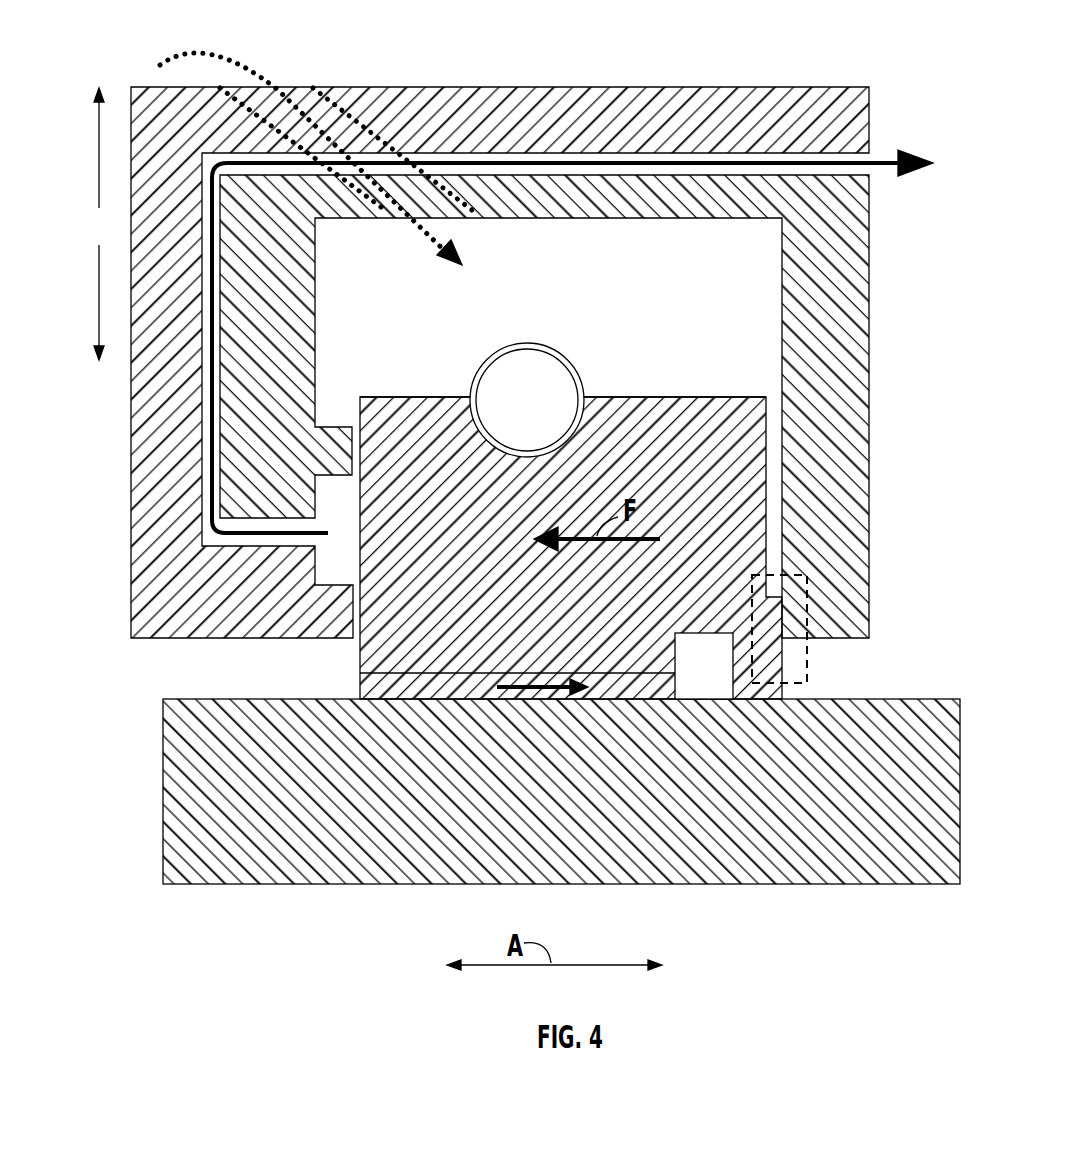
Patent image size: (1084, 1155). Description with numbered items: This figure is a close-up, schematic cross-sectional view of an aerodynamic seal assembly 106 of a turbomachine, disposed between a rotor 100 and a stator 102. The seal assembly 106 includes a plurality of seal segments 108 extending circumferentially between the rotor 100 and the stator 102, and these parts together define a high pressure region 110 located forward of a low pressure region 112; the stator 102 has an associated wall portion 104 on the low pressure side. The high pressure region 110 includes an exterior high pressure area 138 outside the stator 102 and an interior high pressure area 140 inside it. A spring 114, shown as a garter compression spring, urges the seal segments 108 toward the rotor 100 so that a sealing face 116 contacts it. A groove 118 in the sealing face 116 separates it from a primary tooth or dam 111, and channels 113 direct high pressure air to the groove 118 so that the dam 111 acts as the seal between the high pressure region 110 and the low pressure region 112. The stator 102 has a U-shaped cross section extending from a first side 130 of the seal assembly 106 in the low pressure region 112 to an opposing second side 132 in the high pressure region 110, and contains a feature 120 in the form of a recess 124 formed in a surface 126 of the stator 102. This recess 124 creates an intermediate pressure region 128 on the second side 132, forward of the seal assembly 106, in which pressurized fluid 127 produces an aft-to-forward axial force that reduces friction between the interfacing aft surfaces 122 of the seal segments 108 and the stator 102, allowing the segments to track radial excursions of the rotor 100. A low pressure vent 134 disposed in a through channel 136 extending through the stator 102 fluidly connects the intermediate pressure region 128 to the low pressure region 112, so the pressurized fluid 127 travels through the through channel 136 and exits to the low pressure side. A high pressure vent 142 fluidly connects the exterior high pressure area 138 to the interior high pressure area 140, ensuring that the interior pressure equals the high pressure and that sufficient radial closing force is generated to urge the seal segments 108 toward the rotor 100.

The rotor 100 is at (442, 820).
The stator 102 is at (875, 316).
The housing side wall 104 is at (870, 381).
The seal assembly 106 is at (695, 353).
The seal segments 108 is at (635, 388).
The high pressure region 110 is at (312, 292).
The primary tooth or dam 111 is at (805, 690).
The low pressure region 112 is at (940, 436).
The channels 113 is at (614, 700).
The spring 114 is at (480, 357).
The sealing face 116 is at (393, 700).
The groove 118 is at (700, 690).
The feature 120 is at (322, 550).
The interfacing aft surfaces 122 is at (807, 657).
The recess 124 is at (270, 416).
The surface 126 is at (361, 600).
The pressurized fluid 127 is at (210, 373).
The intermediate pressure region 128 is at (356, 512).
The first side 130 is at (766, 487).
The second side 132 is at (360, 460).
The low pressure vent 134 is at (798, 144).
The through channel 136 is at (600, 161).
The exterior high pressure area 138 is at (84, 196).
The interior high pressure area 140 is at (572, 320).
The high pressure vent 142 is at (354, 130).